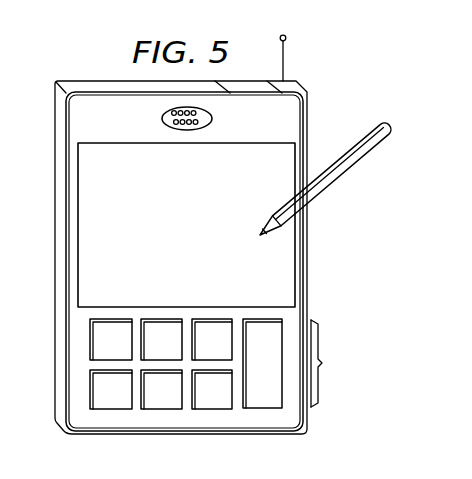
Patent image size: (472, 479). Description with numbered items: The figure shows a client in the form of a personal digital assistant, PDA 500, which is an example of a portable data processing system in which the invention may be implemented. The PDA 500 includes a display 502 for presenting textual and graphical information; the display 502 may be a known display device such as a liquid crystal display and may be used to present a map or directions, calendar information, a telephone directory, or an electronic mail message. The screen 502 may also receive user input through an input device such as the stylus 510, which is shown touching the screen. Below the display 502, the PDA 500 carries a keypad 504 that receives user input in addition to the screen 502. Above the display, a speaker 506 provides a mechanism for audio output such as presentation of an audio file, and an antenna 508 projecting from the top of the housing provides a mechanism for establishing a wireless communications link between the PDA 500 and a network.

The PDA 500 is at (304, 119).
The display 502 is at (207, 238).
The keypad 504 is at (225, 364).
The speaker 506 is at (212, 118).
The antenna 508 is at (284, 63).
The stylus 510 is at (335, 181).